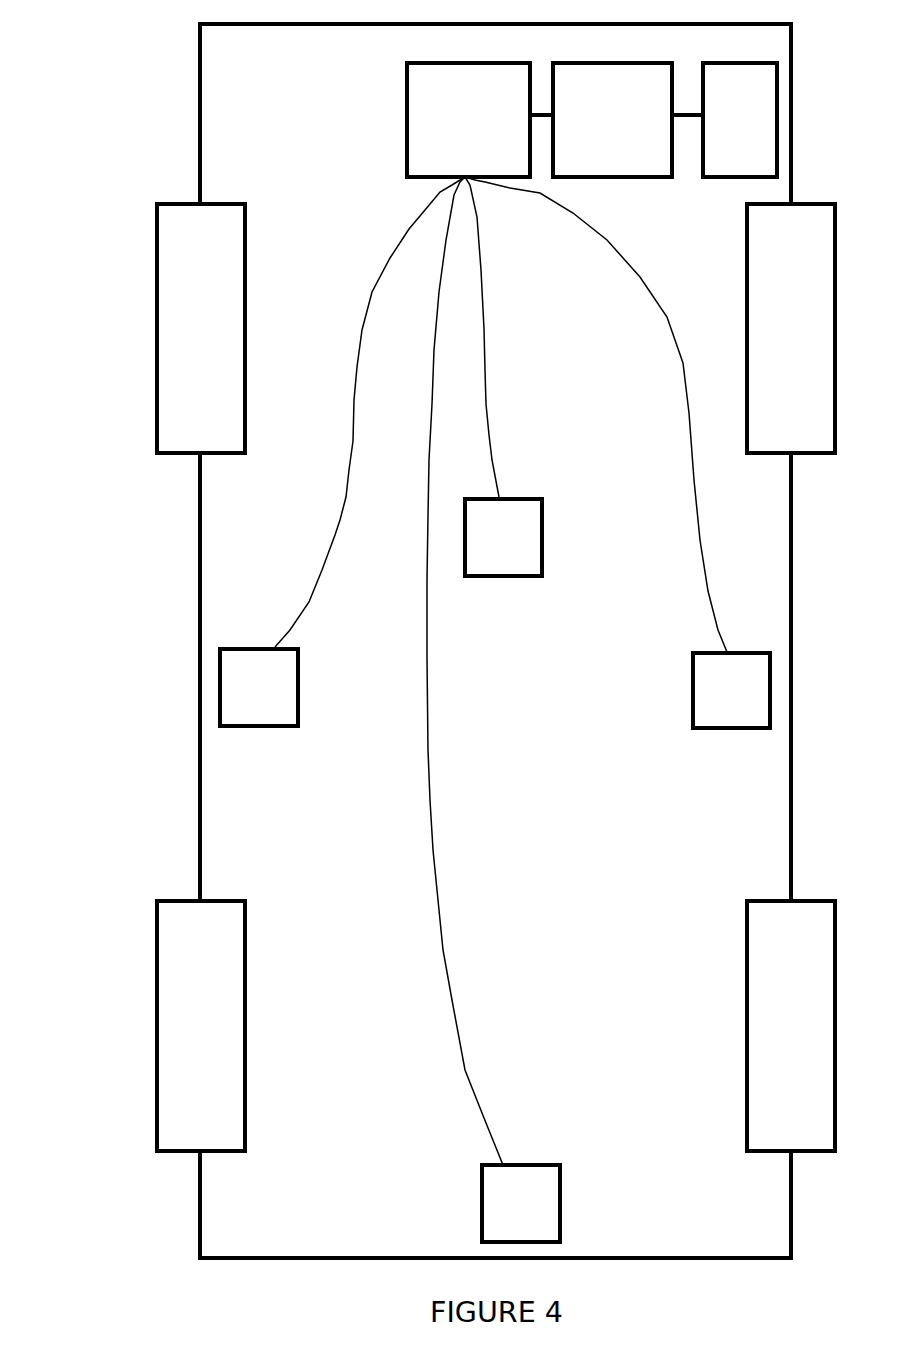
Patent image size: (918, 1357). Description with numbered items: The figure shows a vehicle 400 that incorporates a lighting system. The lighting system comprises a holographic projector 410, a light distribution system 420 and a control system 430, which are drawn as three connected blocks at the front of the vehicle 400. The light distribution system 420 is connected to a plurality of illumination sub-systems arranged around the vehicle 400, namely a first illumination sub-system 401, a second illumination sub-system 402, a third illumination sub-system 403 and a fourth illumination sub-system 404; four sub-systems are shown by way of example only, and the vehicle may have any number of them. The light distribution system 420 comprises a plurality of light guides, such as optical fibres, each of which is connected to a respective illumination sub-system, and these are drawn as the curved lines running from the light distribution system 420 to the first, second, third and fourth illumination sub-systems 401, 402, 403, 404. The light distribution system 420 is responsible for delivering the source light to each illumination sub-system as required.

The vehicle 400 is at (172, 703).
The first illumination sub-system 401 is at (486, 534).
The second illumination sub-system 402 is at (243, 684).
The third illumination sub-system 403 is at (503, 1199).
The fourth illumination sub-system 404 is at (714, 687).
The holographic projector 410 is at (595, 97).
The light distribution system 420 is at (451, 97).
The control system 430 is at (722, 97).